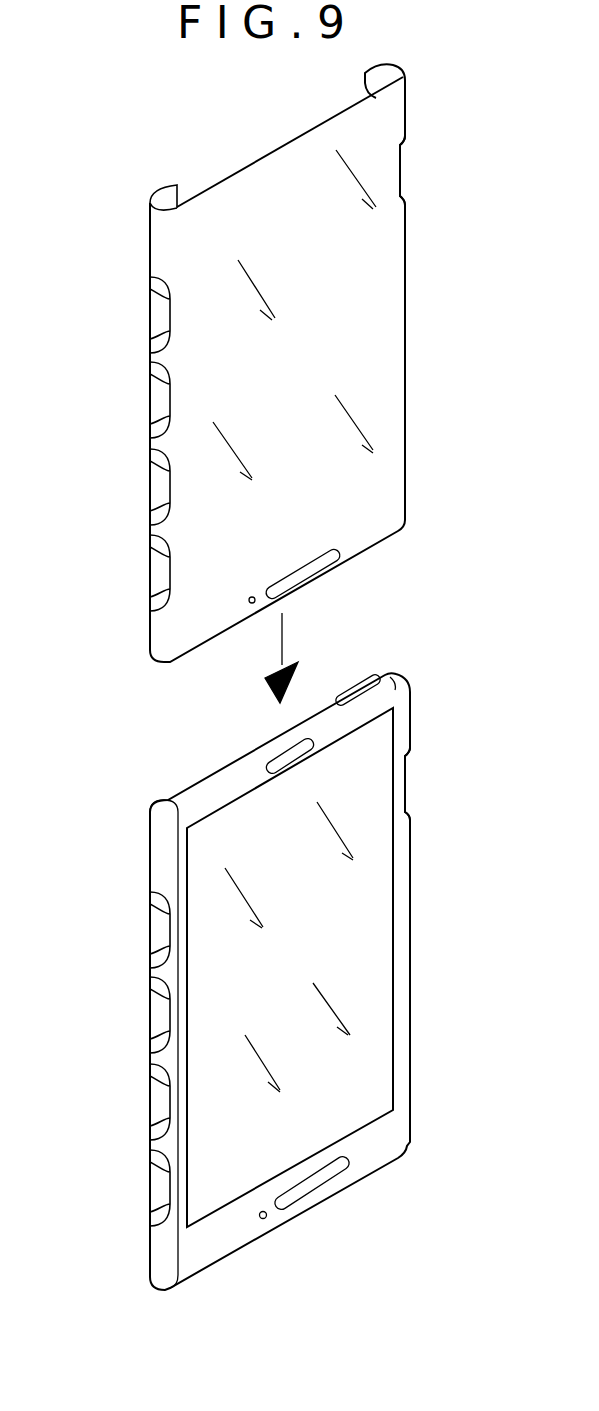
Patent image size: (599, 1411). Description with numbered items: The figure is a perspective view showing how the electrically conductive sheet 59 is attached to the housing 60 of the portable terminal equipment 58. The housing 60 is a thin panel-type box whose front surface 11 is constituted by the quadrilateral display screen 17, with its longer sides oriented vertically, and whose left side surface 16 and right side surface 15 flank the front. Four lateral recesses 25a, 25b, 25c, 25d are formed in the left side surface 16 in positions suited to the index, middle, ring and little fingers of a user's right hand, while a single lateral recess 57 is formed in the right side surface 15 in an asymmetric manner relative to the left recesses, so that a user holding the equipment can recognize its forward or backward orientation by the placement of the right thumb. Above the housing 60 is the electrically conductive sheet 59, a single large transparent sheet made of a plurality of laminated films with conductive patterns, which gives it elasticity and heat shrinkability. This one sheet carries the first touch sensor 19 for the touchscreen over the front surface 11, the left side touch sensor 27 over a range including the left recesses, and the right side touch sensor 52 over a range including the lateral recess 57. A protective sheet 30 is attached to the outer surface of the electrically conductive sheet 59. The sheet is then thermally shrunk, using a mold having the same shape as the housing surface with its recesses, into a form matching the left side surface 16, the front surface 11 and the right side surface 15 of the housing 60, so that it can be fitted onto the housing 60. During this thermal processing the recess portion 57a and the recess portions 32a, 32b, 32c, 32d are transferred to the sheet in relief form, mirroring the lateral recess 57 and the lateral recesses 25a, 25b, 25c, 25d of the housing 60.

The front surface 11 is at (387, 1125).
The right side surface 15 is at (410, 978).
The left side surface 16 is at (153, 870).
The display screen 17 is at (372, 1015).
The first touch sensor 19 is at (375, 347).
The lateral recess 25a is at (160, 930).
The lateral recess 25b is at (160, 1015).
The lateral recess 25c is at (160, 1103).
The lateral recess 25d is at (160, 1188).
The left side touch sensor 27 is at (160, 243).
The protective sheet 30 is at (385, 413).
The recess portion 32a is at (160, 315).
The recess portion 32b is at (160, 401).
The recess portion 32c is at (160, 488).
The recess portion 32d is at (160, 570).
The right side touch sensor 52 is at (405, 278).
The lateral recess 57 is at (405, 778).
The recess portion 57a is at (400, 168).
The portable terminal equipment 58 is at (295, 360).
The electrically conductive sheet 59 is at (236, 149).
The housing 60 is at (277, 981).